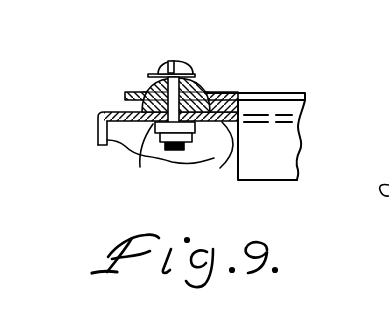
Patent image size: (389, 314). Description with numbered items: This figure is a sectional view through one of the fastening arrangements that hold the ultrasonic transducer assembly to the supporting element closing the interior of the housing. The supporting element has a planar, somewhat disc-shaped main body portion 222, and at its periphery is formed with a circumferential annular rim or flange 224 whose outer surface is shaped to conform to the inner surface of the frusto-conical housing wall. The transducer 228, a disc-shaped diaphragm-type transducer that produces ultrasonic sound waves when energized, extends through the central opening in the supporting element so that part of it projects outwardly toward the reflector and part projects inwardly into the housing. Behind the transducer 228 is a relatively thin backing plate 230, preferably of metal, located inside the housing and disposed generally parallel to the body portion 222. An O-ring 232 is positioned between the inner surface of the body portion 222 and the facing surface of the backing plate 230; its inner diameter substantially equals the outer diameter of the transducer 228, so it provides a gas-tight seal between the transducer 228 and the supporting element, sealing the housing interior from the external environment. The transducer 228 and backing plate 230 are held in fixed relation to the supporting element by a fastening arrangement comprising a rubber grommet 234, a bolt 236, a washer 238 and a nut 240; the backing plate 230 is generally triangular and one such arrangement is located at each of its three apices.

The main body portion 222 is at (220, 168).
The circumferential annular rim 224 is at (98, 127).
The transducer means 228 is at (284, 135).
The backing plate 230 is at (300, 93).
The O-ring 232 is at (227, 92).
The rubber grommet 234 is at (146, 86).
The bolt 236 is at (180, 61).
The washer 238 is at (197, 78).
The nut 240 is at (145, 156).